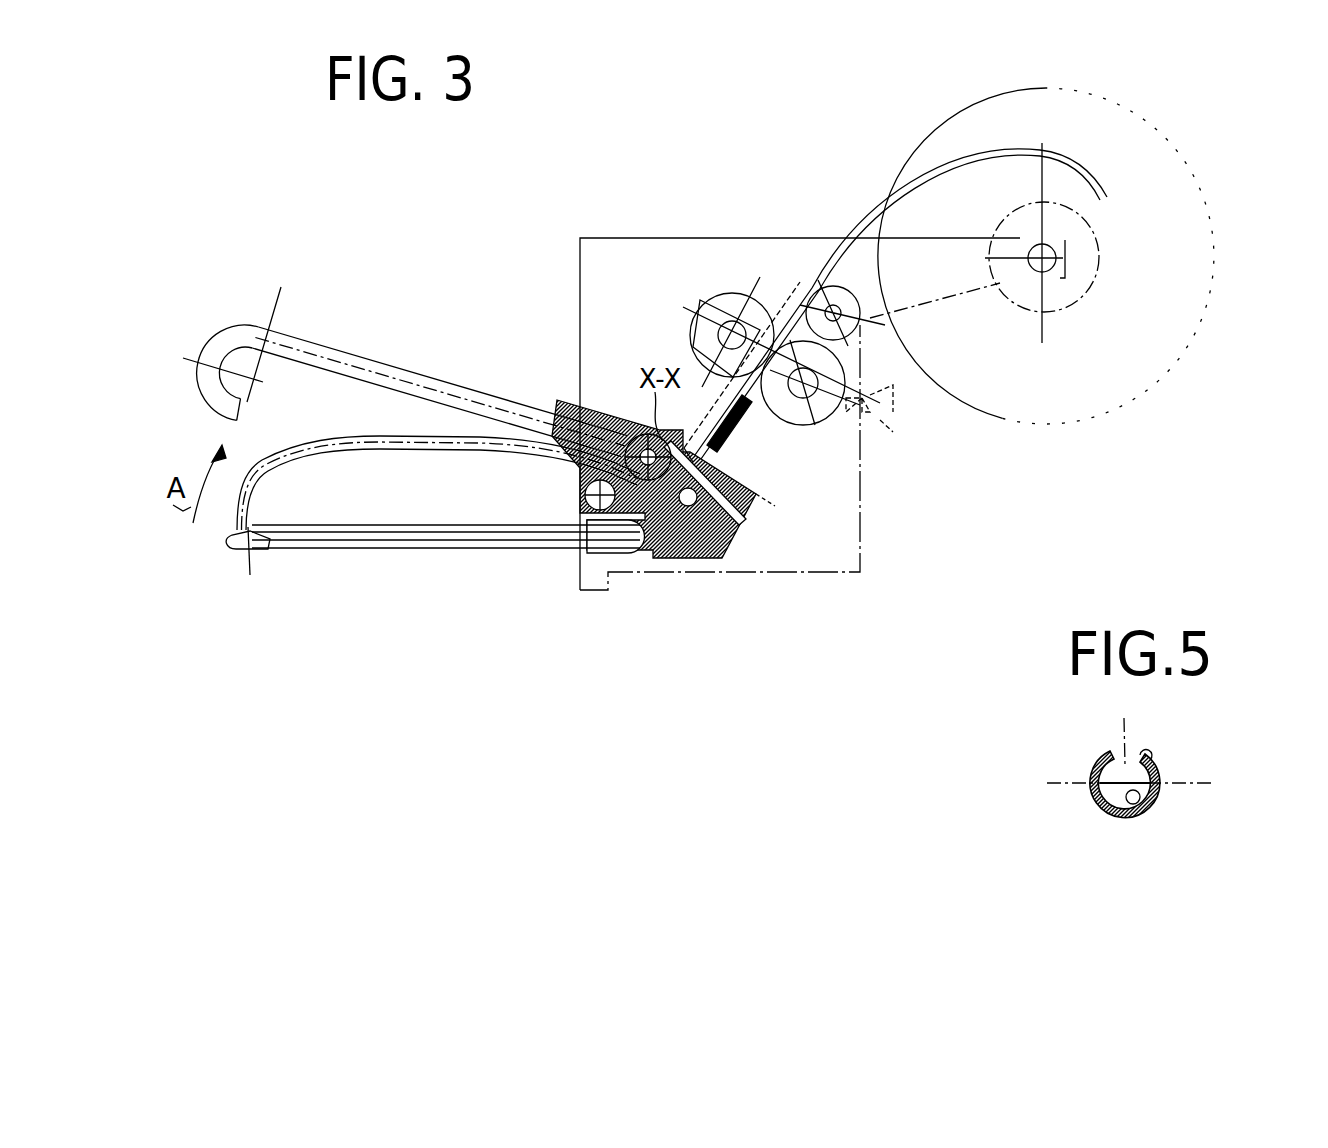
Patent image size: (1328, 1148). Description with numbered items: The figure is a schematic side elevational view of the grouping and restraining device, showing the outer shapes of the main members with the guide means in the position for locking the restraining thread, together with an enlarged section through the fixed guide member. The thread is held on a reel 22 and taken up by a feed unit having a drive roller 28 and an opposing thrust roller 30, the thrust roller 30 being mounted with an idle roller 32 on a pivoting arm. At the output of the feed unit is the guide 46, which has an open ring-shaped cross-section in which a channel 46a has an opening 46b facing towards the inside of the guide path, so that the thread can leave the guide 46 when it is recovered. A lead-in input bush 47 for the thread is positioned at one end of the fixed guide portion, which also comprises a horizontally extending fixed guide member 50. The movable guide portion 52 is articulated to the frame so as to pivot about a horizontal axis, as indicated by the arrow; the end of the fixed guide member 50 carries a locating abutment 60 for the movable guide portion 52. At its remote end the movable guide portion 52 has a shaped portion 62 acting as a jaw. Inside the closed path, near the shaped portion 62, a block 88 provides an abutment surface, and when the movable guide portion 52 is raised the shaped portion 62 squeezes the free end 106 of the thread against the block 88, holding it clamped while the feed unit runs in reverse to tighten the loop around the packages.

In FIG. 3, the reel 22 is at (1040, 427).
In FIG. 3, the drive roller 28 is at (707, 306).
In FIG. 3, the thrust roller 30 is at (815, 424).
In FIG. 3, the idle roller 32 is at (835, 284).
In FIG. 3, the guide 46 is at (167, 440).
In FIG. 5, the channel 46a is at (1130, 822).
In FIG. 5, the opening 46b is at (1157, 777).
In FIG. 3, the lead-in input bush 47 is at (750, 437).
In FIG. 3, the fixed guide member 50 is at (390, 552).
In FIG. 5, the fixed guide member 50 is at (1163, 781).
In FIG. 3, the movable guide portion 52 is at (331, 322).
In FIG. 3, the locating abutment 60 is at (240, 548).
In FIG. 3, the shaped portion 62 is at (645, 452).
In FIG. 3, the block 88 is at (650, 522).
In FIG. 3, the free end 106 is at (707, 518).